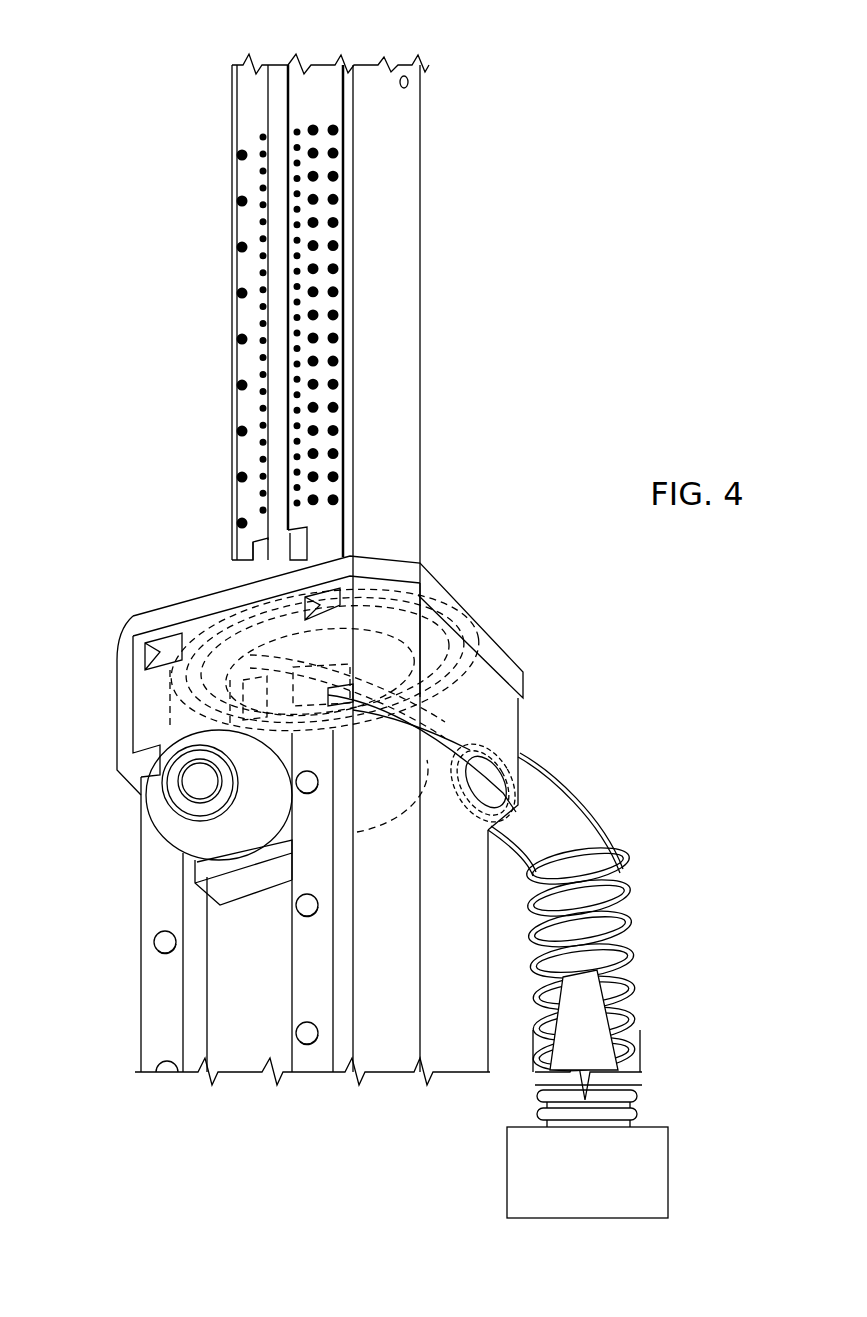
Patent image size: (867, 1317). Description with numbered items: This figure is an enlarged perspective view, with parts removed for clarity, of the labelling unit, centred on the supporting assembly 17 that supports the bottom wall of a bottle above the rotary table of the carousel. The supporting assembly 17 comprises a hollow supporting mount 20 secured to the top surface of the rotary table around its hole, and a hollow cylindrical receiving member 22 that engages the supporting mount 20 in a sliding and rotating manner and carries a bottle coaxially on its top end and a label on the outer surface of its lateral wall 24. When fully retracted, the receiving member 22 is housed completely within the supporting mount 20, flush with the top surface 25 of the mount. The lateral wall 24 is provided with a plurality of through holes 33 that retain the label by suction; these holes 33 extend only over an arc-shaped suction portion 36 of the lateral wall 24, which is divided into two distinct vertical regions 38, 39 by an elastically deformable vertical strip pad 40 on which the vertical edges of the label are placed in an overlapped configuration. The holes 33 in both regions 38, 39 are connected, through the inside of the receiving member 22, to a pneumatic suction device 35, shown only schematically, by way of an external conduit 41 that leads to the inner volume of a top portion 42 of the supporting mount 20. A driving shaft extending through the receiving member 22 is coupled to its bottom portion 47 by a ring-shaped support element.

The supporting assembly 17 is at (176, 1122).
The hollow supporting mount 20 is at (150, 958).
The hollow cylindrical receiving member 22 is at (428, 410).
The lateral wall 24 is at (243, 555).
The top surface 25 is at (464, 599).
The through holes 33 is at (337, 328).
The pneumatic suction device 35 is at (520, 1163).
The suction portion 36 is at (302, 87).
The vertical region 38 is at (250, 104).
The vertical region 39 is at (322, 108).
The vertical strip pad 40 is at (276, 65).
The external conduit 41 is at (615, 977).
The top portion 42 is at (505, 733).
The bottom portion 47 is at (400, 528).